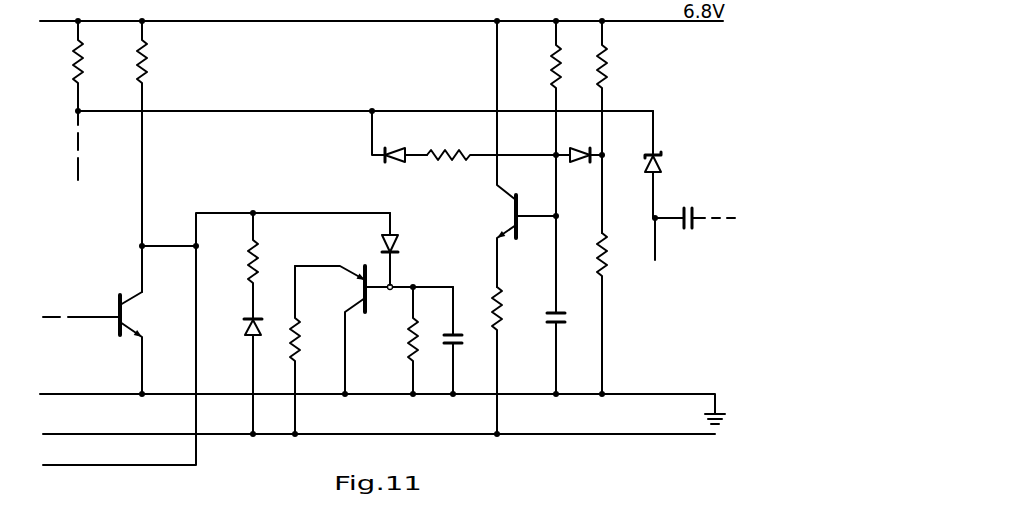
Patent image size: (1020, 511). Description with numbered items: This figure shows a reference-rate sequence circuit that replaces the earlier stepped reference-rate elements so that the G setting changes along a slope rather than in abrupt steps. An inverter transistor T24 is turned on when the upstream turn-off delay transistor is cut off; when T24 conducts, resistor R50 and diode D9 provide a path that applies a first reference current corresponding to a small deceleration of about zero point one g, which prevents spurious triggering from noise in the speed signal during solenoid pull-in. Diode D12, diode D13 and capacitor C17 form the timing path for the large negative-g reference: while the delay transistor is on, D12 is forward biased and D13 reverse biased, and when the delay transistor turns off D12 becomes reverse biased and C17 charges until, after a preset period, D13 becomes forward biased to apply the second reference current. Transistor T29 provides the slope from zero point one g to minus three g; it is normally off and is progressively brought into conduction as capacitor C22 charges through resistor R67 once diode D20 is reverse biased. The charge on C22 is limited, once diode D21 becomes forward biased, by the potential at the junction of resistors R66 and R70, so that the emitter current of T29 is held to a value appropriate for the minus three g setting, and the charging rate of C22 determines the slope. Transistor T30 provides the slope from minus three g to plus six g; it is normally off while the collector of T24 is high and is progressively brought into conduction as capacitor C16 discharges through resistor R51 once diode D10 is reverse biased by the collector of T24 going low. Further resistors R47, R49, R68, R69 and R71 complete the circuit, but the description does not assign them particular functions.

The resistor R47 is at (85, 74).
The resistor R49 is at (150, 74).
The resistor R50 is at (245, 260).
The resistor R51 is at (408, 344).
The resistor R66 is at (612, 76).
The resistor R67 is at (548, 72).
The resistor R68 is at (446, 151).
The resistor R69 is at (302, 346).
The resistor R70 is at (596, 258).
The resistor R71 is at (503, 318).
The transistor T24 is at (122, 315).
The transistor T29 is at (512, 212).
The transistor T30 is at (362, 290).
The diode D9 is at (243, 330).
The diode D10 is at (398, 242).
The diode D12 is at (666, 162).
The diode D13 is at (657, 255).
The diode D20 is at (394, 152).
The diode D21 is at (582, 151).
The capacitor C16 is at (462, 341).
The capacitor C17 is at (688, 207).
The capacitor C22 is at (565, 320).